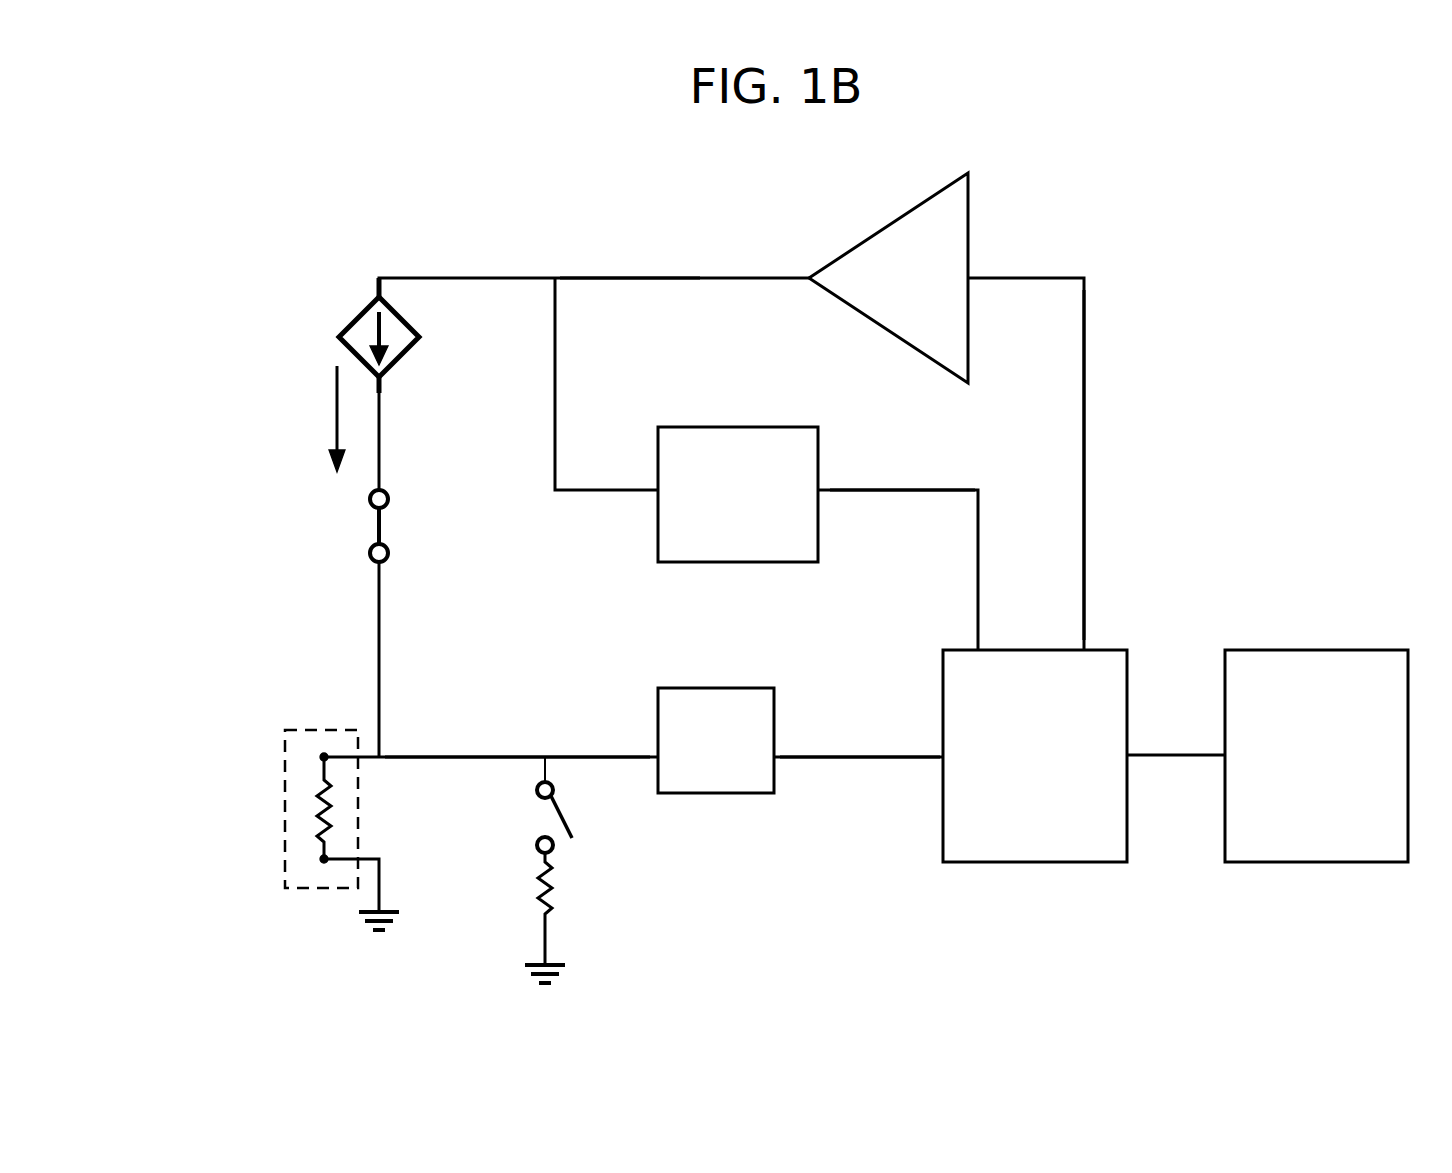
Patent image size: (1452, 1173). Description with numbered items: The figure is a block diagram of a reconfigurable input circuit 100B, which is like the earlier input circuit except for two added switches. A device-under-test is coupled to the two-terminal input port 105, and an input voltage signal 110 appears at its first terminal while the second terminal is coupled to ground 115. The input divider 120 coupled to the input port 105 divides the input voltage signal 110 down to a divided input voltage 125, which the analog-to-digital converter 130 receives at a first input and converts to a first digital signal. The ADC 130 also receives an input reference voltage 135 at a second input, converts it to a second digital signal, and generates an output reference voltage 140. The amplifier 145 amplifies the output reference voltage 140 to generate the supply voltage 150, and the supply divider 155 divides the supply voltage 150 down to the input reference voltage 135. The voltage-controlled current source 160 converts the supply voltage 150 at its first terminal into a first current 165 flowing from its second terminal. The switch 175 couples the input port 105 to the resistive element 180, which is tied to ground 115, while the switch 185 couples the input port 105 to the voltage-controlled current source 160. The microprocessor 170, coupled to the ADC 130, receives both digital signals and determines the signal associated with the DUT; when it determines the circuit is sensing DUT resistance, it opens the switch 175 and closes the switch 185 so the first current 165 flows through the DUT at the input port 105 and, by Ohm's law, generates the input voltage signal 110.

The reconfigurable input circuit 100B is at (222, 140).
The input port 105 is at (285, 805).
The input voltage signal 110 is at (458, 756).
The ground 115 is at (405, 913).
The input divider 120 is at (774, 781).
The divided input voltage 125 is at (852, 756).
The analog-to-digital converter 130 is at (1110, 650).
The input reference voltage 135 is at (930, 490).
The output reference voltage 140 is at (1090, 432).
The amplifier 145 is at (968, 233).
The supply voltage 150 is at (620, 278).
The supply divider 155 is at (818, 525).
The voltage-controlled current source 160 is at (345, 318).
The first current 165 is at (323, 410).
The microprocessor 170 is at (1293, 650).
The switch 175 is at (575, 822).
The resistive element 180 is at (560, 893).
The switch 185 is at (375, 530).